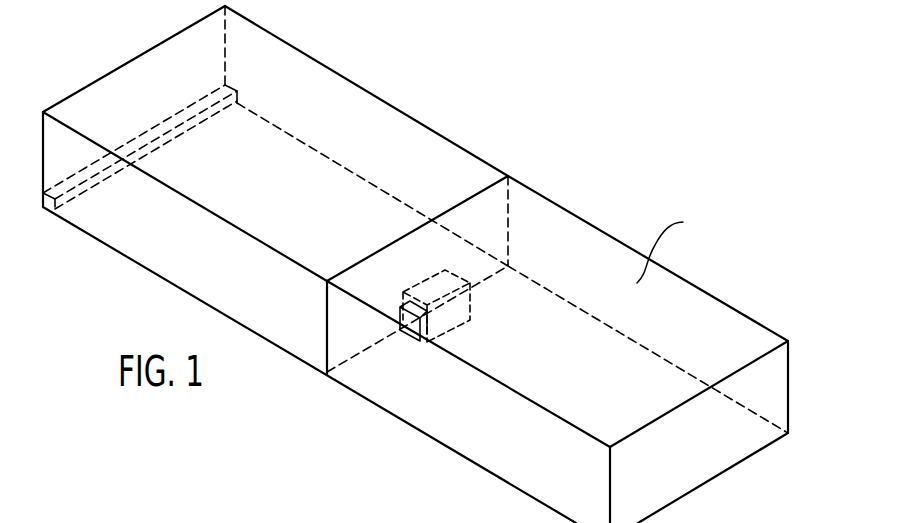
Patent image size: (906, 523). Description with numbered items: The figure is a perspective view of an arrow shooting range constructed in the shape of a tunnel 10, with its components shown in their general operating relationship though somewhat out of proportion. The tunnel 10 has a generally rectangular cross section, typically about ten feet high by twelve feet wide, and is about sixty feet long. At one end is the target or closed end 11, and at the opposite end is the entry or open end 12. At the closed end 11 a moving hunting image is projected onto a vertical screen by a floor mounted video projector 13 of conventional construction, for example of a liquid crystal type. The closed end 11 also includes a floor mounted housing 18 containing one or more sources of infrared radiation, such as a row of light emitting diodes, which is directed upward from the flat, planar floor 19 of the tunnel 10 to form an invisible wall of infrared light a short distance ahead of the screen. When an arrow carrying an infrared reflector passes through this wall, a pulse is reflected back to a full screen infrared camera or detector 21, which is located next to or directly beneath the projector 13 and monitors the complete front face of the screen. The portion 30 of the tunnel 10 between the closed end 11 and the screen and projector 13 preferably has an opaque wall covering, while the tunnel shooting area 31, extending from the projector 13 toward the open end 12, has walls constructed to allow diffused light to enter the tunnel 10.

The tunnel 10 is at (445, 261).
The closed end 11 is at (120, 55).
The open end 12 is at (796, 387).
The video projector 13 is at (452, 318).
The housing 18 is at (92, 186).
The floor 19 is at (718, 452).
The IR camera or detector 21 is at (410, 337).
The portion of tunnel 30 is at (275, 143).
The tunnel shooting area 31 is at (557, 311).